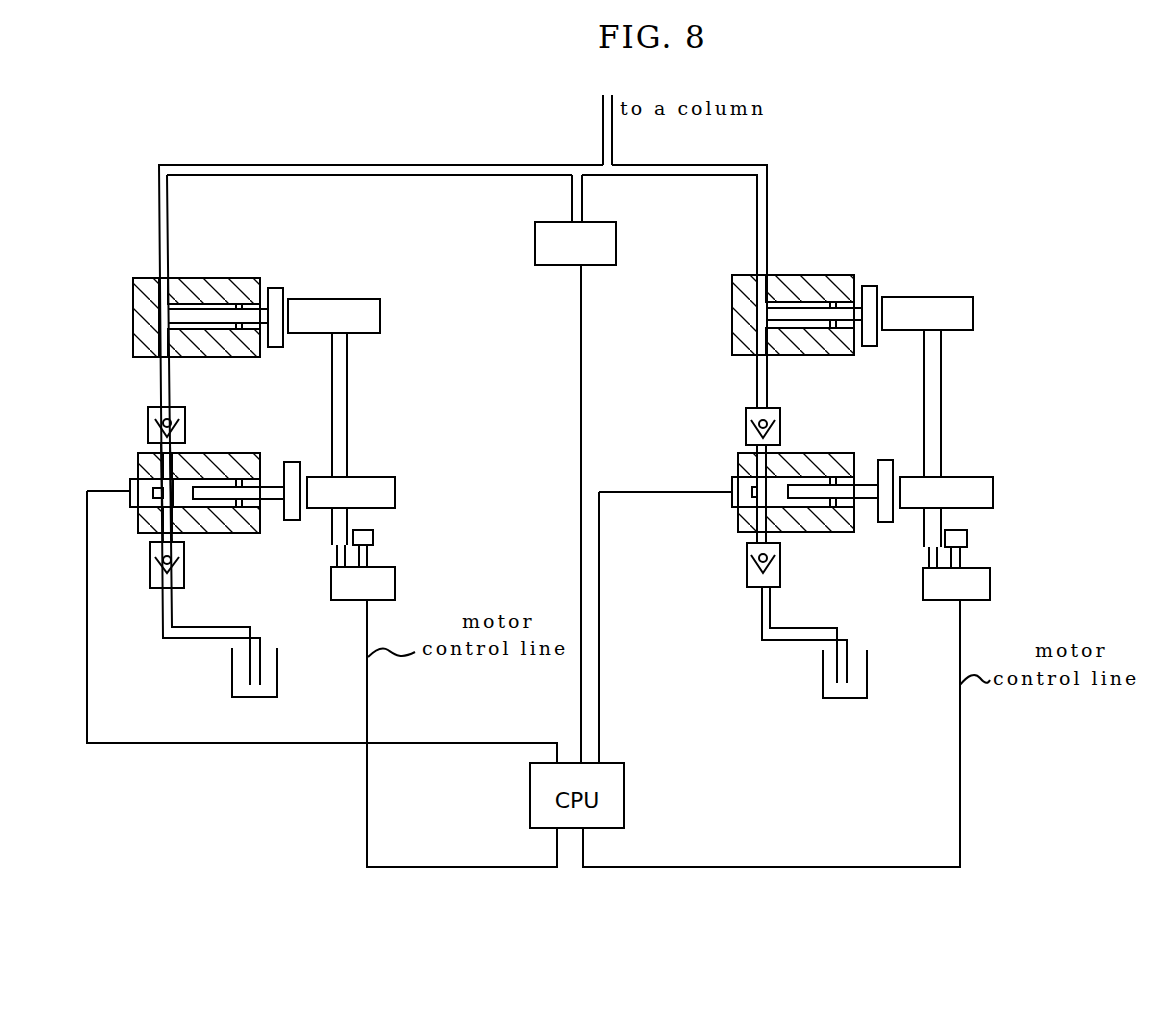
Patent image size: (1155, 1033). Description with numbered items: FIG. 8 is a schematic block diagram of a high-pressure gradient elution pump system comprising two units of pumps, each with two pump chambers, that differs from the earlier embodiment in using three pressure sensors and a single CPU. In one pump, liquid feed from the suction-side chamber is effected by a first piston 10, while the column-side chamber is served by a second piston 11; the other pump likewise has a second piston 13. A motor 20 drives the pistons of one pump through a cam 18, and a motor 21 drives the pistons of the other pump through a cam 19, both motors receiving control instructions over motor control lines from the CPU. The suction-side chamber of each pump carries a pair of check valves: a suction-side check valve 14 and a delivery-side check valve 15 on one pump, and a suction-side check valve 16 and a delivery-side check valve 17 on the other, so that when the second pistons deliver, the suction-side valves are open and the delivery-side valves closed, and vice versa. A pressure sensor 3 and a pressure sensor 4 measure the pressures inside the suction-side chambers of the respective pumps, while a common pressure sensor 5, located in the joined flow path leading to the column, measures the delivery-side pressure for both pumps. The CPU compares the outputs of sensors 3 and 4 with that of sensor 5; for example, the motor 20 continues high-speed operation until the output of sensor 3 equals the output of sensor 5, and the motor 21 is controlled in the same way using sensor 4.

The pressure sensor 3 is at (131, 507).
The pressure sensor 4 is at (732, 507).
The pressure sensor 5 is at (616, 243).
The first piston 10 is at (289, 465).
The second piston 11 is at (278, 288).
The second piston 13 is at (872, 285).
The check valve 14 is at (184, 560).
The check valve 15 is at (183, 407).
The check valve 16 is at (780, 562).
The check valve 17 is at (782, 408).
The cam 18 is at (340, 388).
The cam 19 is at (941, 388).
The motor 20 is at (395, 585).
The motor 21 is at (983, 580).